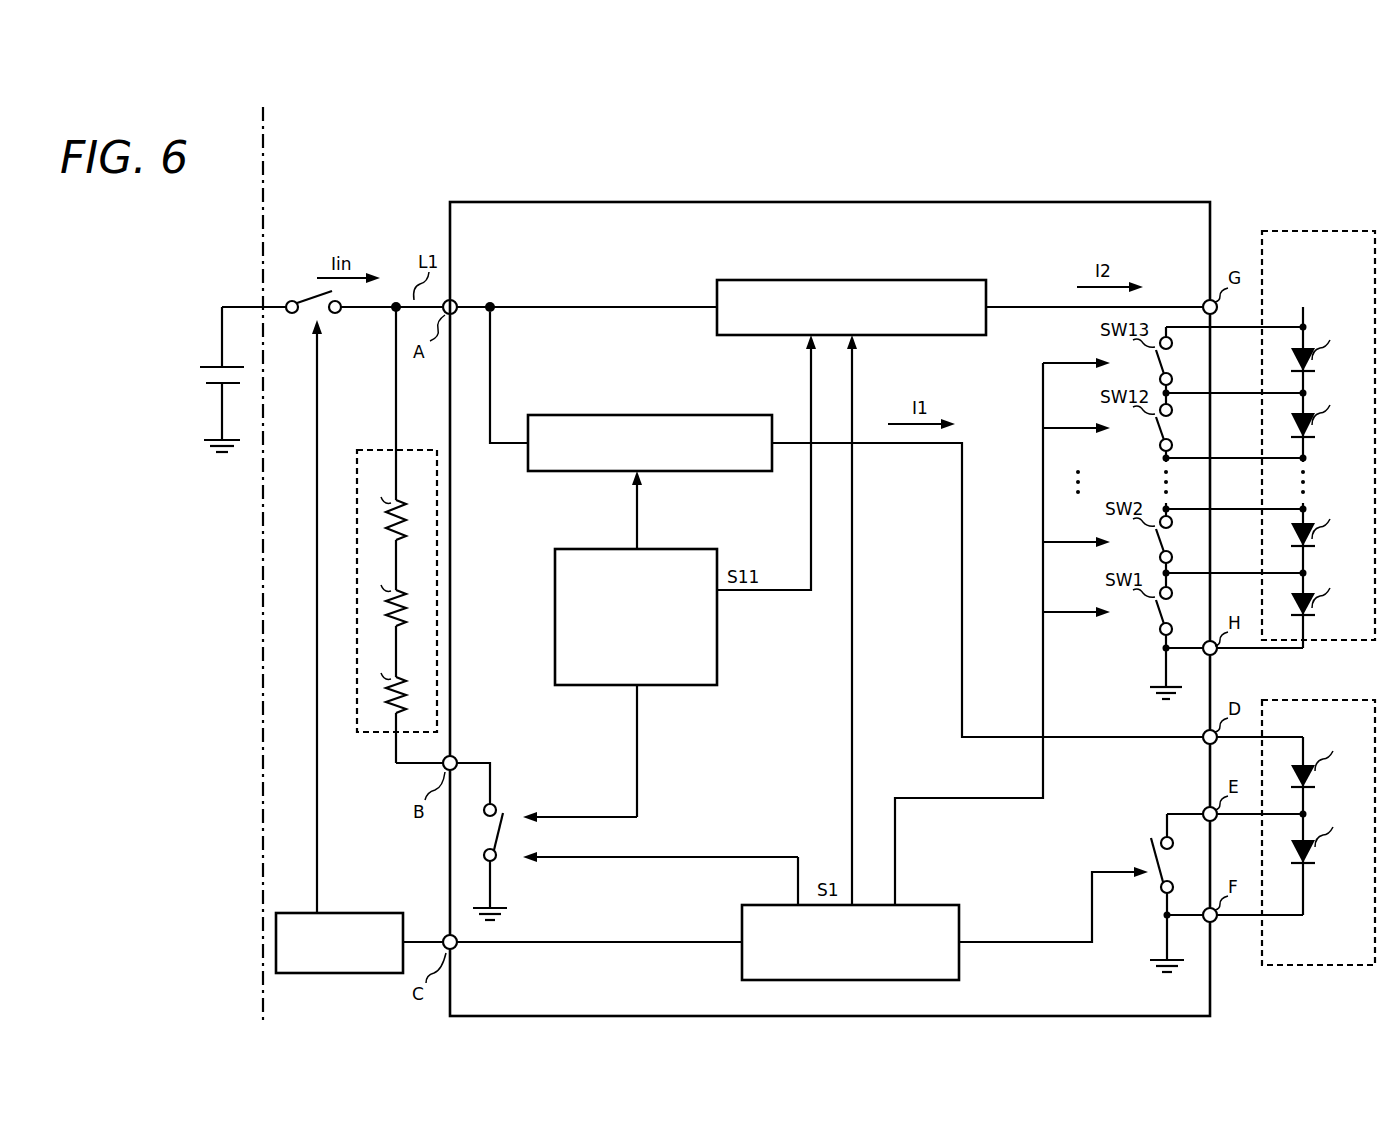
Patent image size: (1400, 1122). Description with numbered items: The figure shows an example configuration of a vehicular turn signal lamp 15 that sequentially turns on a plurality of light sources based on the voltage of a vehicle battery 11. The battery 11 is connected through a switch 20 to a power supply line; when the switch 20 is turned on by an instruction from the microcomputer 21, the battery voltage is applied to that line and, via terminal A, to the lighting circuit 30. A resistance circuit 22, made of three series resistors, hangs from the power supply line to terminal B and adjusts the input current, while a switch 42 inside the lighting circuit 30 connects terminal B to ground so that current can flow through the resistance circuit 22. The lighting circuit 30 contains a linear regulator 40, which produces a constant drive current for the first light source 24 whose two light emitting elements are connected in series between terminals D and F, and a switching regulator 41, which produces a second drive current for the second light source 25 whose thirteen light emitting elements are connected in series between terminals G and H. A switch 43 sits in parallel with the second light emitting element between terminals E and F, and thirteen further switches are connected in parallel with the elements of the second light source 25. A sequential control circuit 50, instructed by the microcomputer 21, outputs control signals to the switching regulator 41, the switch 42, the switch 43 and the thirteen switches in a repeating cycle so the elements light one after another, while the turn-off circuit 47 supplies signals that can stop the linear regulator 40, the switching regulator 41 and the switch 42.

The vehicle battery 11 is at (208, 365).
The turn signal lamp 15 is at (322, 145).
The switch 20 is at (295, 300).
The microcomputer 21 is at (374, 913).
The resistance circuit 22 is at (357, 450).
The first light source 24 is at (1313, 700).
The second light source 25 is at (1316, 233).
The lighting circuit 30 is at (456, 202).
The linear regulator 40 is at (535, 415).
The switching regulator 41 is at (722, 280).
The switch 42 is at (497, 856).
The switch 43 is at (1149, 840).
The turn-off circuit 47 is at (720, 549).
The sequential control circuit 50 is at (954, 905).